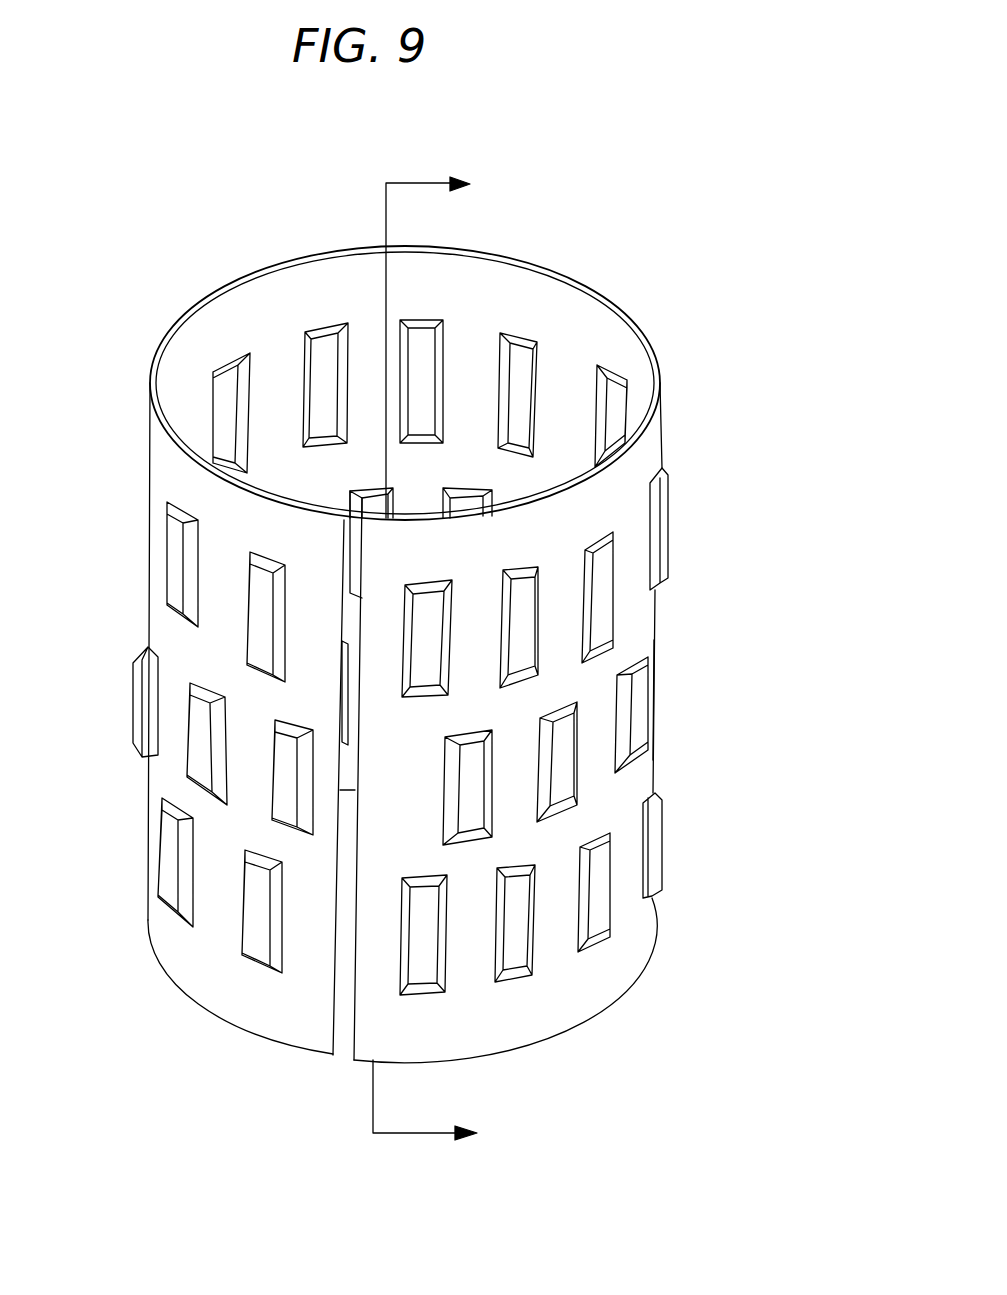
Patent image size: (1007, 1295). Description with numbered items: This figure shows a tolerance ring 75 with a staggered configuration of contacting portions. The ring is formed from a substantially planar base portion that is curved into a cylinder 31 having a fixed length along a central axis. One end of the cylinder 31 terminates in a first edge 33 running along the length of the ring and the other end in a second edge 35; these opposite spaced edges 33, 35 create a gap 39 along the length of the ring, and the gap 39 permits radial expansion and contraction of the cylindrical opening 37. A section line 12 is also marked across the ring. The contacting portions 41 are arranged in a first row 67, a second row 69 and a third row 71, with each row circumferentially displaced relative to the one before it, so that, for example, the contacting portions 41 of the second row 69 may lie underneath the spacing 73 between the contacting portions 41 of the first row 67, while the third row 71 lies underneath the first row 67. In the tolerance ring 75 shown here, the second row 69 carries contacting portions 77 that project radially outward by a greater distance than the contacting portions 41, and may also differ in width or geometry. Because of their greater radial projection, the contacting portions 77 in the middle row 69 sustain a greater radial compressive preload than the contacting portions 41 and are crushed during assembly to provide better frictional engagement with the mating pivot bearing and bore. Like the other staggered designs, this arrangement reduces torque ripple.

The section line 12- 12 is at (448, 662).
The cylinder 31 is at (655, 442).
The first edge 33 is at (295, 1018).
The second edge 35 is at (390, 1032).
The cylindrical opening 37 is at (270, 345).
The gap 39 is at (338, 972).
The contacting portions 41 is at (142, 652).
The first row 67 is at (704, 508).
The second row 69 is at (694, 723).
The third row 71 is at (700, 843).
The spacing 73 is at (220, 557).
The tolerance ring 75 is at (676, 288).
The contacting portions 77 is at (645, 717).